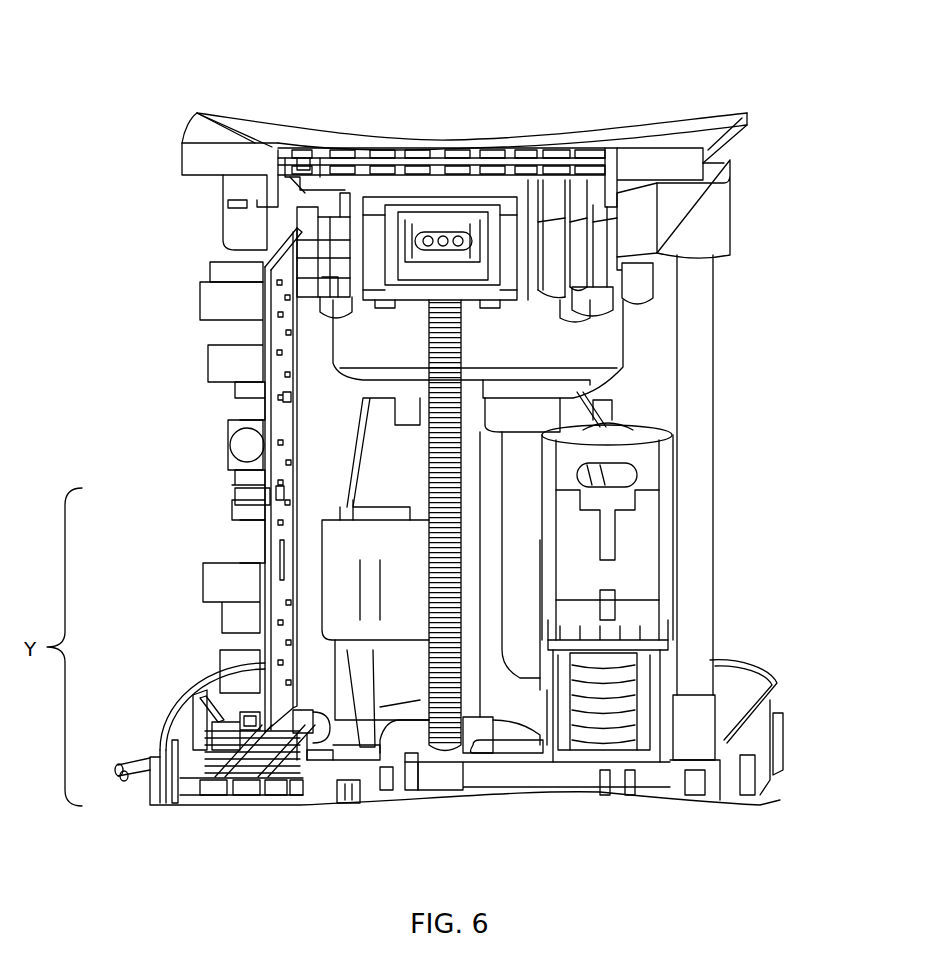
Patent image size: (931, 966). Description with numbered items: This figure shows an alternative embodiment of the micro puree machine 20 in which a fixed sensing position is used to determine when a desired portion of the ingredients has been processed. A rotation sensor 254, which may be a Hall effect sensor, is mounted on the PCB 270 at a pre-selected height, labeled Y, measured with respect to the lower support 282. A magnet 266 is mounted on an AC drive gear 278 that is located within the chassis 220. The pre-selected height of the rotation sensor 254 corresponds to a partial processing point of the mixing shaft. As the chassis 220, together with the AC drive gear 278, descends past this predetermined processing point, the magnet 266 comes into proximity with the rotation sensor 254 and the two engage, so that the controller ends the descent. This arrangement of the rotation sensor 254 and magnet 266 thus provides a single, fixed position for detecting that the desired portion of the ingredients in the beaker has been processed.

The micro puree machine 20 is at (144, 131).
The magnet 266 is at (312, 198).
The AC drive gear 278 is at (297, 233).
The chassis 220 is at (710, 228).
The PCB 270 is at (270, 402).
The rotation sensor 254 is at (262, 496).
The lower support 282 is at (200, 783).